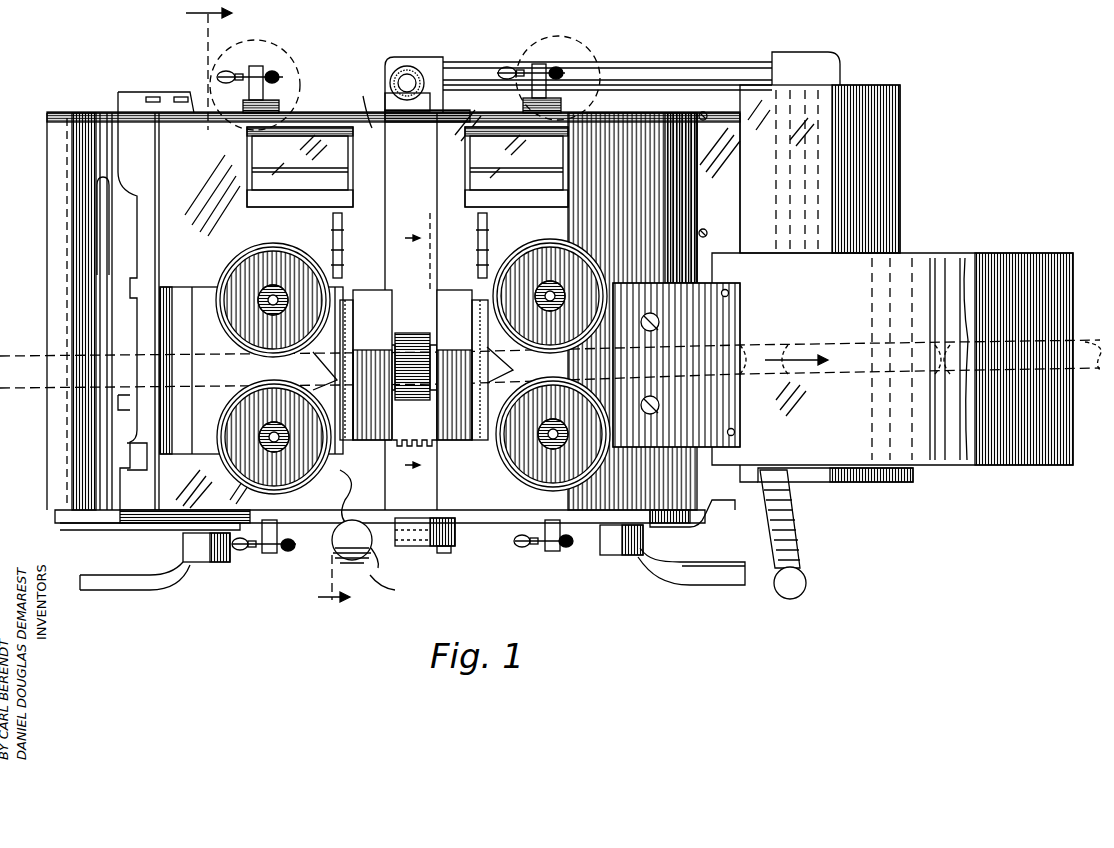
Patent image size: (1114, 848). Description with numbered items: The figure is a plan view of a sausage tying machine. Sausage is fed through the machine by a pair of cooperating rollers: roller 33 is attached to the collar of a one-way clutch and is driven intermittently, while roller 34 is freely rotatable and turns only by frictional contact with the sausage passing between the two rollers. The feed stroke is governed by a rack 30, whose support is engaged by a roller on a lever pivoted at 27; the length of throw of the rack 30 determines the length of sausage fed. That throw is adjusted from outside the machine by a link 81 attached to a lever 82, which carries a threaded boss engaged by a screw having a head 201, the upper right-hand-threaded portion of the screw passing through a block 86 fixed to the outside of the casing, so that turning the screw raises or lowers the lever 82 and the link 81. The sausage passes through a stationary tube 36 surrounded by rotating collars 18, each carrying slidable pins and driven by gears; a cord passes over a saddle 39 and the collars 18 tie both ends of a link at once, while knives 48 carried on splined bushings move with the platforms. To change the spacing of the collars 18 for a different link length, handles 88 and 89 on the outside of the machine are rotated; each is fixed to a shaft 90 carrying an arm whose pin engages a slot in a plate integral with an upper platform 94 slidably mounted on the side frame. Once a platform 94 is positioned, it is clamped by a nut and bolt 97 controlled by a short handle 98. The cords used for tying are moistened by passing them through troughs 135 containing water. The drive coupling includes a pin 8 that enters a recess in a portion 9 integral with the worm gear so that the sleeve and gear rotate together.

The pin 8 is at (269, 312).
The portion integral with gear 9 is at (420, 346).
The collar 18 is at (365, 445).
The pivot 27 is at (447, 553).
The rack 30 is at (428, 440).
The roller 33 is at (598, 256).
The roller 34 is at (232, 262).
The stationary tube 36 is at (412, 335).
The saddle 39 is at (344, 265).
The knife 48 is at (320, 372).
The link 81 is at (332, 540).
The lever 82 is at (415, 535).
The block 86 is at (382, 565).
The handle 88 is at (125, 590).
The handle 89 is at (715, 585).
The shaft 90 is at (185, 537).
The upper platform 94 is at (295, 590).
The bolt 97 is at (262, 70).
The short handle 98 is at (240, 72).
The trough 135 is at (336, 134).
The head of screw 201 is at (397, 587).